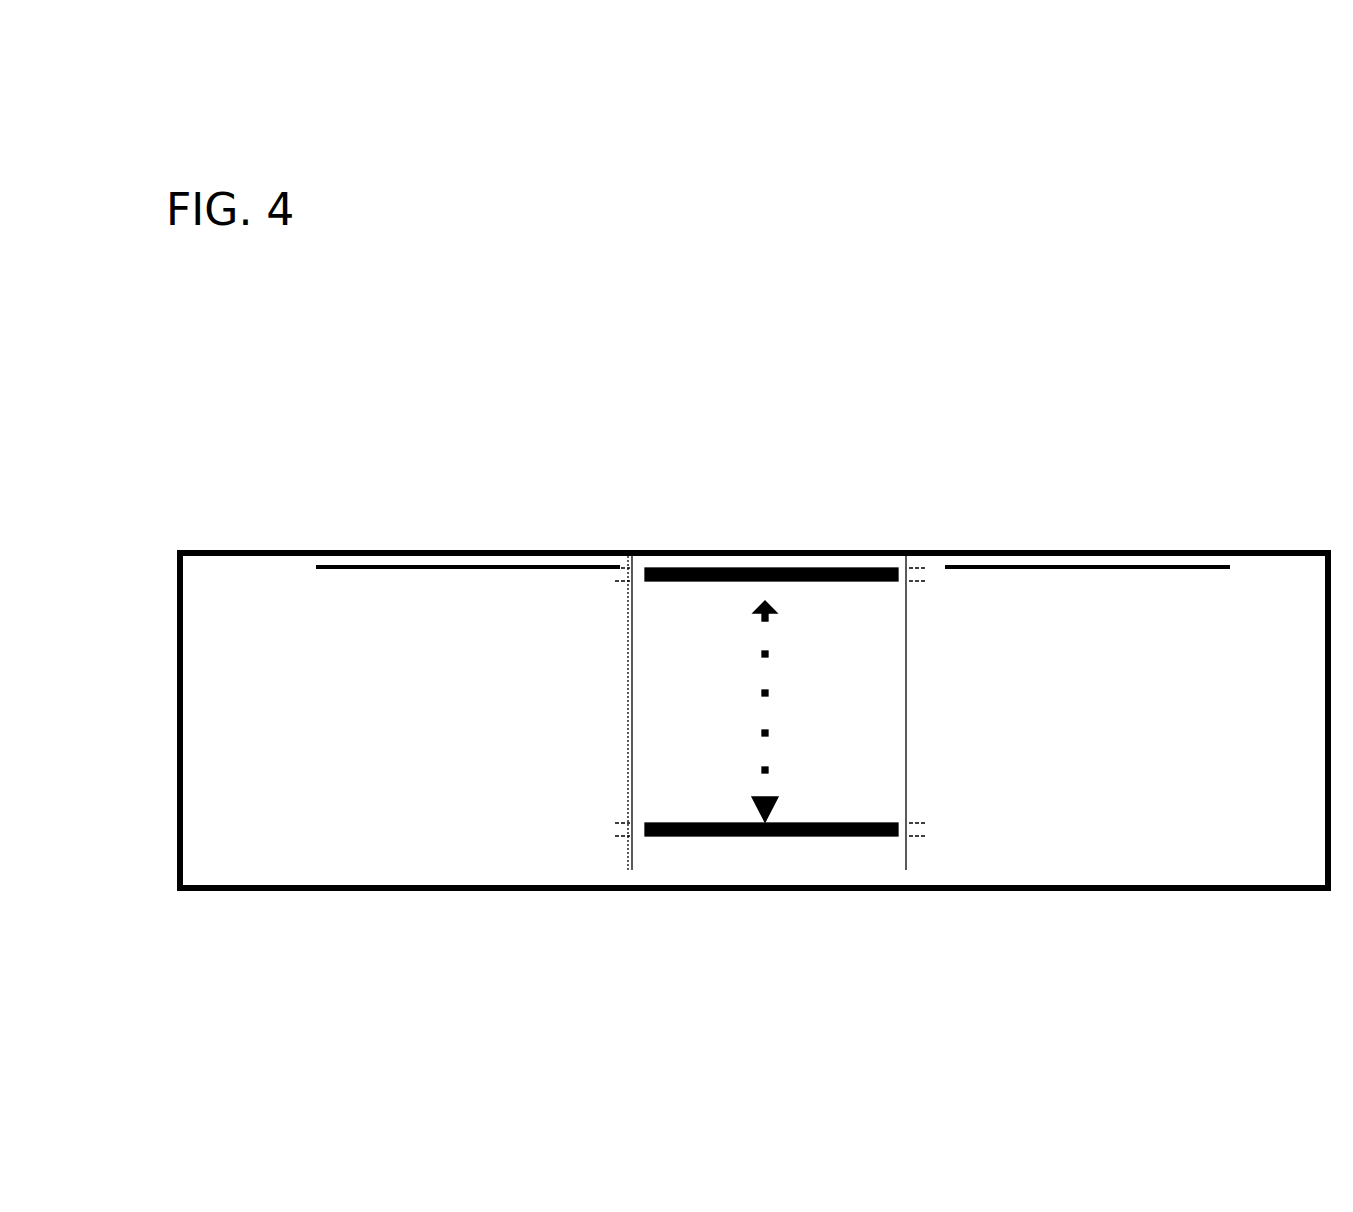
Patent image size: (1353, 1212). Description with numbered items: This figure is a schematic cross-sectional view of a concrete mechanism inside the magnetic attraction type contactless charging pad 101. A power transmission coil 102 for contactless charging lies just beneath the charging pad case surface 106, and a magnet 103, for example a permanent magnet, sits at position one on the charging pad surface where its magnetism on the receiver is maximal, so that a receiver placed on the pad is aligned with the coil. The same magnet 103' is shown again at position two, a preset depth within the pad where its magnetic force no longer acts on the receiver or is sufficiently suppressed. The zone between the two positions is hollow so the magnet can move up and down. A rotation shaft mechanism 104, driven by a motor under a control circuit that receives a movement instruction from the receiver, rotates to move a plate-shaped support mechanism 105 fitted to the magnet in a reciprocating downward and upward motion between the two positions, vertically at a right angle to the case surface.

The magnetic attraction type contactless charging pad 101 is at (703, 673).
The power transmission coil 102 is at (565, 567).
The magnet 103 is at (773, 539).
The magnet 103' is at (771, 743).
The rotation shaft mechanism 104 is at (902, 650).
The support mechanism 105 is at (916, 821).
The charging pad case surface 106 is at (372, 522).